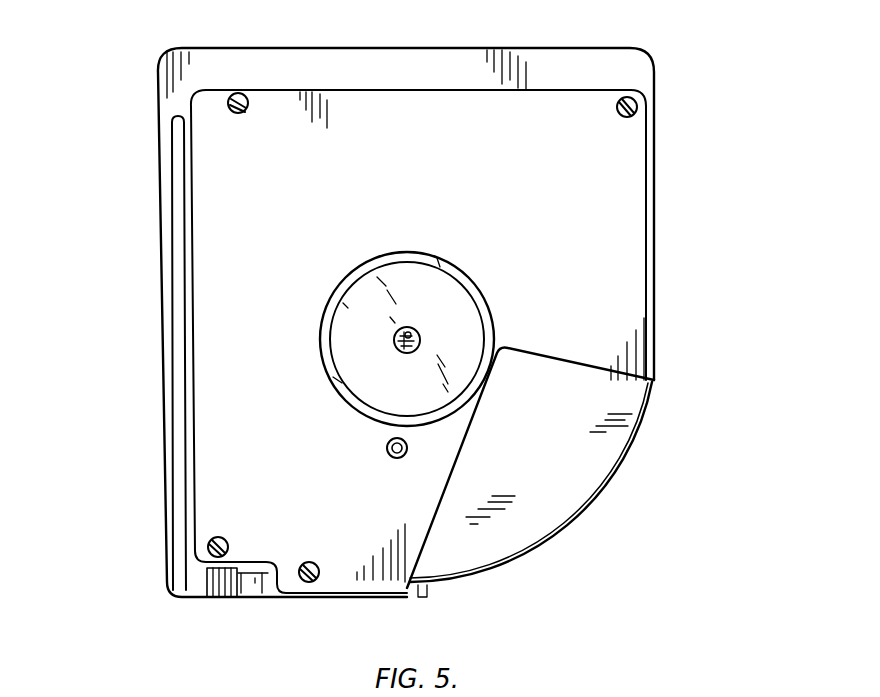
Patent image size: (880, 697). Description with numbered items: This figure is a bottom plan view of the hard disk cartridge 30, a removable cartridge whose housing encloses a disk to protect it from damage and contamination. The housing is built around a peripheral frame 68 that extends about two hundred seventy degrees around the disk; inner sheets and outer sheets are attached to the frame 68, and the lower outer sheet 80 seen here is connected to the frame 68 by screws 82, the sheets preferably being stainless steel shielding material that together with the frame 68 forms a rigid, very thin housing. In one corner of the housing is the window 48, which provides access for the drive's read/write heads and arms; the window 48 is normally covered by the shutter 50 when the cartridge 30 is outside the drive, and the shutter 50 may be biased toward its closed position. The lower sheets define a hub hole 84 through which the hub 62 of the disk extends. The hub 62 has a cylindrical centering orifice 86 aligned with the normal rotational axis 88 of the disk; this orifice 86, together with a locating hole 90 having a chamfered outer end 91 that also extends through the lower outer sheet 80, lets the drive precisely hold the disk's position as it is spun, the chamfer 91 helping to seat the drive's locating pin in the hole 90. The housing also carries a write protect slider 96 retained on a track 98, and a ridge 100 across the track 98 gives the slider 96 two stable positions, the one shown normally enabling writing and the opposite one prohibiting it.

The hard disk cartridge 30 is at (158, 268).
The window 48 is at (646, 429).
The shutter 50 is at (540, 548).
The hub 62 is at (345, 300).
The peripheral frame 68 is at (641, 80).
The lower outer sheet 80 is at (628, 222).
The screws 82 is at (238, 92).
The hub hole 84 is at (423, 256).
The cylindrical centering orifice 86 is at (398, 350).
The normal rotational axis 88 is at (410, 331).
The locating hole 90 is at (385, 462).
The chamfered outer end 91 is at (386, 452).
The write protect slider 96 is at (212, 602).
The track 98 is at (262, 598).
The ridge 100 is at (247, 598).